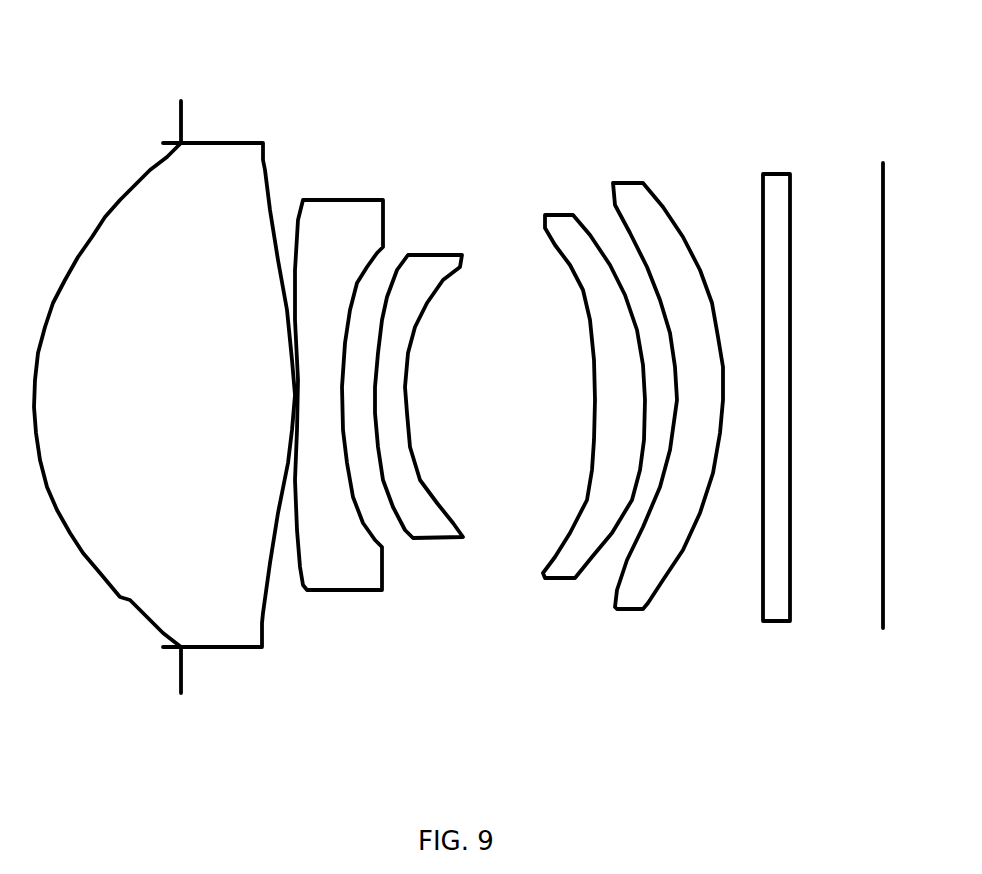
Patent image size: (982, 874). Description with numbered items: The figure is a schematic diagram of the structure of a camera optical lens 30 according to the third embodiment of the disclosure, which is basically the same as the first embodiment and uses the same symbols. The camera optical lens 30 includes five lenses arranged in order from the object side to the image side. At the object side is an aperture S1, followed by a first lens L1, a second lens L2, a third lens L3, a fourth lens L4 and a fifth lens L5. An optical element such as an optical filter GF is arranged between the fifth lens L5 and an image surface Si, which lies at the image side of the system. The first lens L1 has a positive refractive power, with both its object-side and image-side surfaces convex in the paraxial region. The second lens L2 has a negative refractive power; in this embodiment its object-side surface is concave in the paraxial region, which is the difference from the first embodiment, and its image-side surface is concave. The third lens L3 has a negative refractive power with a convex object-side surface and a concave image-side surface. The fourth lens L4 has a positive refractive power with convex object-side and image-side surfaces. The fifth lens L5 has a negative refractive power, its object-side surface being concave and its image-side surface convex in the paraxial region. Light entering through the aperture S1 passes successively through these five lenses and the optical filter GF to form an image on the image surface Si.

The camera optical lens 30 is at (461, 52).
The aperture S1 is at (180, 384).
The first lens L1 is at (164, 381).
The second lens L2 is at (339, 382).
The third lens L3 is at (419, 383).
The fourth lens L4 is at (594, 384).
The fifth lens L5 is at (668, 384).
The optical filter GF is at (778, 383).
The image surface Si is at (883, 385).